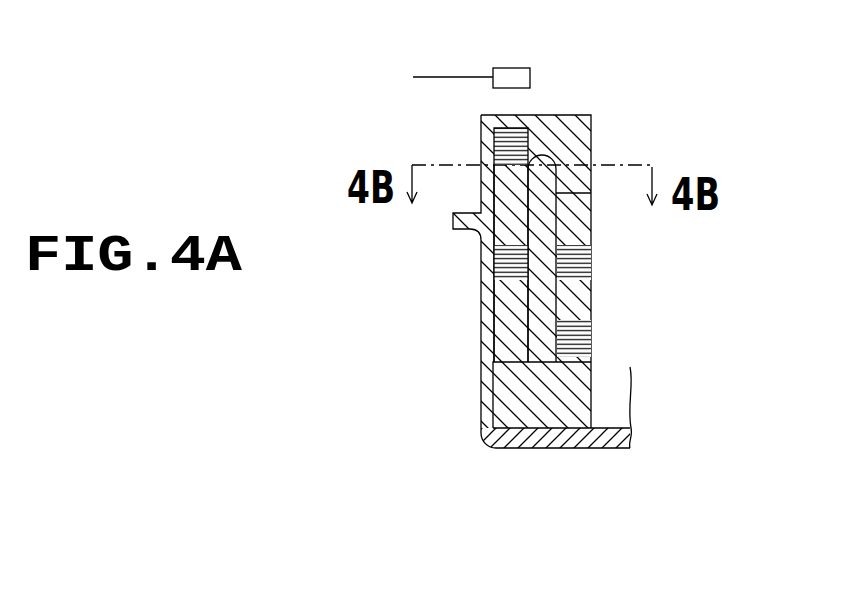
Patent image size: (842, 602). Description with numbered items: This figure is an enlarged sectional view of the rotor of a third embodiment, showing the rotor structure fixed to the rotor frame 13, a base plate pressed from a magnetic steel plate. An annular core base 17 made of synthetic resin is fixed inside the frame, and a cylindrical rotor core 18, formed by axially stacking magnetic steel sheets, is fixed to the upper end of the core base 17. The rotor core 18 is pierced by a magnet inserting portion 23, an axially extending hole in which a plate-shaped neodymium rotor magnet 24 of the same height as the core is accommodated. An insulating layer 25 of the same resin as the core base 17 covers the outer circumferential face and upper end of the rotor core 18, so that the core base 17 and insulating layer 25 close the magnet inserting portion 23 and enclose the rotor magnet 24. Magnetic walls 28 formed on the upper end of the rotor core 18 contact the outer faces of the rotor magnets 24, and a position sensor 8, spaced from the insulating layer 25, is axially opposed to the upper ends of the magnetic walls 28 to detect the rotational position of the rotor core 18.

The position sensor 8 is at (512, 68).
The rotor frame 13 is at (553, 462).
The core base 17 is at (497, 399).
The rotor core 18 is at (590, 298).
The magnet inserting portion 23 is at (536, 308).
The rotor magnet 24 is at (490, 270).
The insulating layer 25 is at (593, 114).
The magnetic wall 28 is at (494, 136).